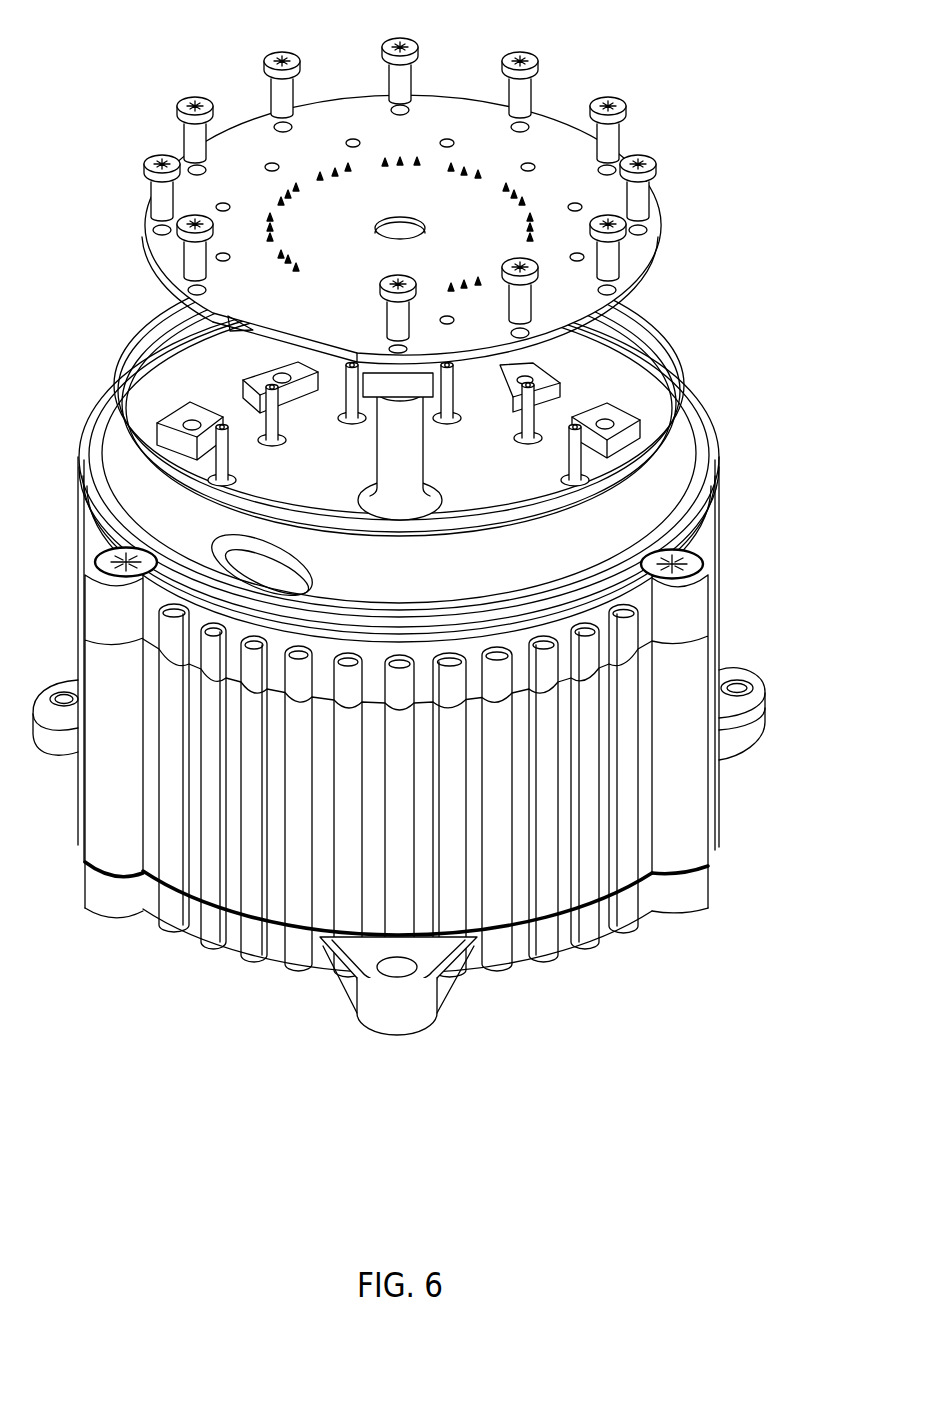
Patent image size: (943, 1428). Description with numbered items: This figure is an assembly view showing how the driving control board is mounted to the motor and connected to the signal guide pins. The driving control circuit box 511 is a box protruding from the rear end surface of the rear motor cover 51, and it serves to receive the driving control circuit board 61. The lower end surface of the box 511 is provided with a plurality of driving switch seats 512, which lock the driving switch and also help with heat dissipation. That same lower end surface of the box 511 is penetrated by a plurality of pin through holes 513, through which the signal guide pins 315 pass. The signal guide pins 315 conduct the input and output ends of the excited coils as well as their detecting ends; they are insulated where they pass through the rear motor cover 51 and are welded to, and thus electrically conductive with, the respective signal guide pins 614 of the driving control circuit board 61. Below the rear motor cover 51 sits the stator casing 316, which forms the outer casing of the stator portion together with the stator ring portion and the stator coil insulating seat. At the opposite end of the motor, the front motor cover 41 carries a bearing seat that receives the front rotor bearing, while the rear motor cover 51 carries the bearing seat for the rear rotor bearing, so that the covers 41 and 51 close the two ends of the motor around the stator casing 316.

The driving control circuit board 61 is at (553, 157).
The signal guide pins of the driving control circuit board 614 is at (630, 200).
The driving control circuit box 511 is at (605, 357).
The signal guide pins 315 is at (565, 398).
The driving switch seats 512 is at (682, 425).
The pin through holes 513 is at (465, 430).
The rear motor cover 51 is at (690, 612).
The stator casing 316 is at (682, 790).
The front motor cover 41 is at (693, 906).